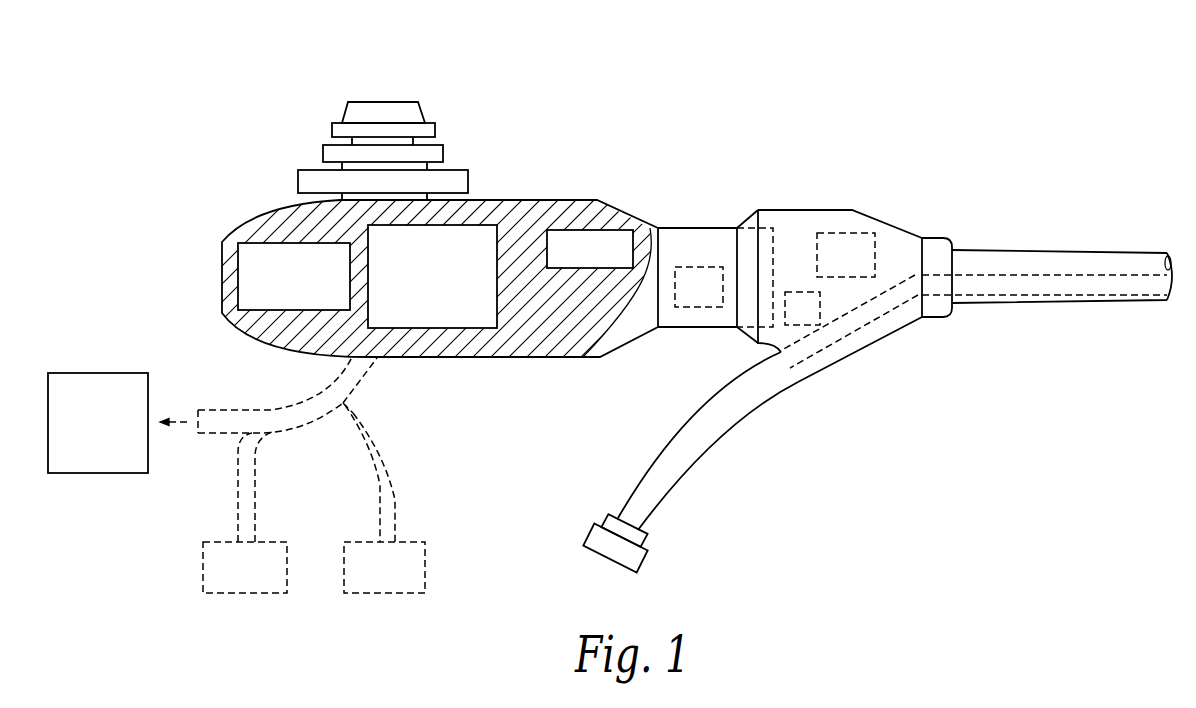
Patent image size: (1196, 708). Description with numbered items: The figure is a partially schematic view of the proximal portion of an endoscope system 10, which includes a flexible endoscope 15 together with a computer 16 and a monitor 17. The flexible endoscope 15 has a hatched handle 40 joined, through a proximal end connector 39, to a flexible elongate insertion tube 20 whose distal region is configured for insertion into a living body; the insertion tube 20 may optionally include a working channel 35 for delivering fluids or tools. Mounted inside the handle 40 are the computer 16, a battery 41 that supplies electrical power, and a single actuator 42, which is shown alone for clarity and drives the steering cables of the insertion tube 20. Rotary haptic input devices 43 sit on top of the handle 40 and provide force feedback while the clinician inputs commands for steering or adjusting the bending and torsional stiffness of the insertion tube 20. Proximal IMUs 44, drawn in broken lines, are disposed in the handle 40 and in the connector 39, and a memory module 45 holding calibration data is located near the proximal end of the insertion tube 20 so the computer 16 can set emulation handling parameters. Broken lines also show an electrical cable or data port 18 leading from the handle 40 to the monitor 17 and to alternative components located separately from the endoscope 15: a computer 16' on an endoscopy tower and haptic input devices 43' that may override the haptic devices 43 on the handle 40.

The endoscope system 10 is at (298, 118).
The flexible endoscope 15 is at (802, 193).
The computer 16 is at (432, 276).
The computer 16' is at (245, 512).
The monitor 17 is at (123, 473).
The electrical cable or data port 18 is at (302, 428).
The flexible elongate insertion tube 20 is at (953, 347).
The working channel 35 is at (707, 433).
The proximal end connector 39 is at (830, 368).
The handle 40 is at (240, 228).
The battery 41 is at (309, 294).
The actuator 42 is at (605, 262).
The haptic input device 43 is at (425, 143).
The haptic input device 43' is at (384, 499).
The proximal IMU 44 is at (703, 266).
The memory module 45 is at (783, 332).